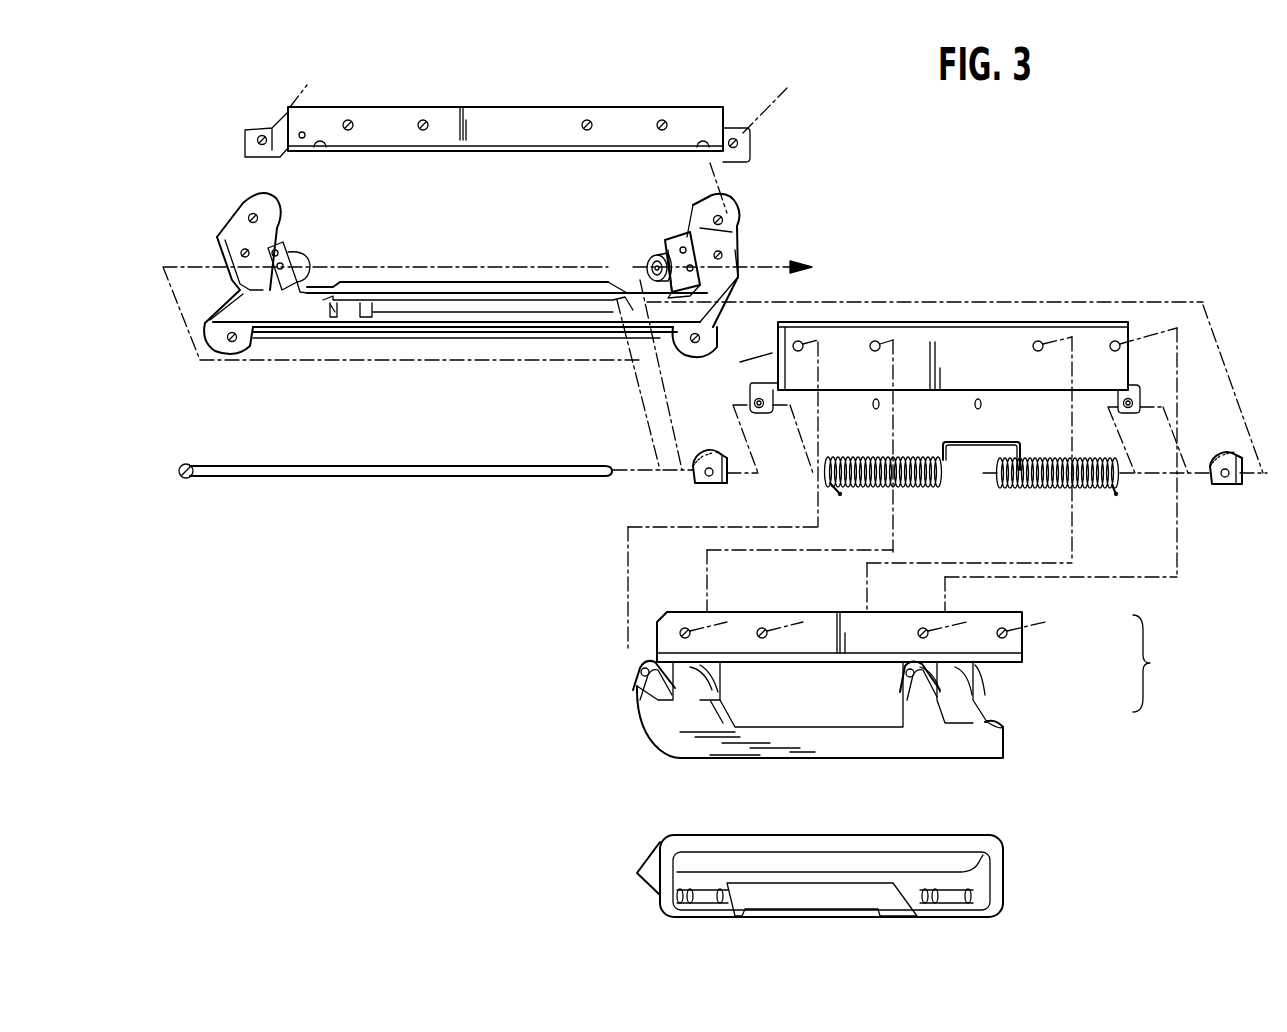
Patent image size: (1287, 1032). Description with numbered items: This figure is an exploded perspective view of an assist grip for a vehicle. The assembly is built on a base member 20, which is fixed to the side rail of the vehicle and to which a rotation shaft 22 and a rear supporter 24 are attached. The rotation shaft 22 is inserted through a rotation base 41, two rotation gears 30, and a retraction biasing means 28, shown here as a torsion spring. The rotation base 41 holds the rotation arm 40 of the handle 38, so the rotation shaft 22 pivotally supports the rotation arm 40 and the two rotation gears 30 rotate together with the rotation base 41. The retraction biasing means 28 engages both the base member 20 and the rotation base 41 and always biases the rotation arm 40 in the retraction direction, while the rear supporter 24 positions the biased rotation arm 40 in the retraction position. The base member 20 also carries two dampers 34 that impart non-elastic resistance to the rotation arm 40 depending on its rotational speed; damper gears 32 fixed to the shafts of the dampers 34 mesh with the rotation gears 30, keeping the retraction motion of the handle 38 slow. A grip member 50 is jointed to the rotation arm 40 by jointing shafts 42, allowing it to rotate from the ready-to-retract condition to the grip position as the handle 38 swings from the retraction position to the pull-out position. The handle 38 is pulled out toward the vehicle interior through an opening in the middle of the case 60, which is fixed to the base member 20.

The base member 20 is at (247, 243).
The rotation shaft 22 is at (184, 464).
The rear supporter 24 is at (303, 138).
The retraction biasing means 28 is at (1110, 492).
The rotation gear 30 is at (1228, 484).
The damper gear 32 is at (668, 242).
The damper 34 is at (644, 250).
The handle 38 is at (910, 685).
The rotation arm 40 is at (1007, 650).
The rotation base 41 is at (1088, 328).
The jointing shaft 42 is at (640, 672).
The grip member 50 is at (990, 738).
The case 60 is at (1003, 865).